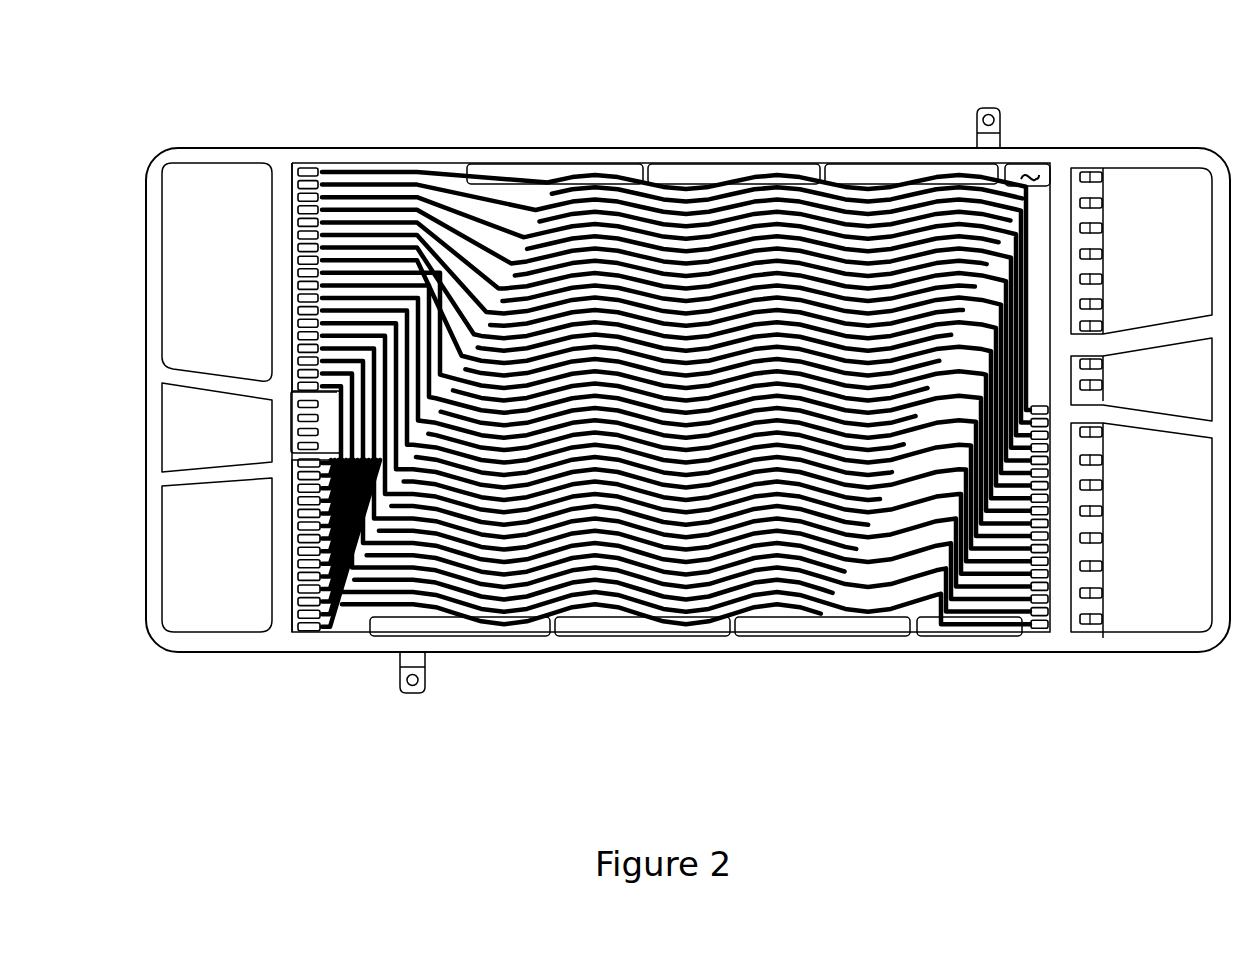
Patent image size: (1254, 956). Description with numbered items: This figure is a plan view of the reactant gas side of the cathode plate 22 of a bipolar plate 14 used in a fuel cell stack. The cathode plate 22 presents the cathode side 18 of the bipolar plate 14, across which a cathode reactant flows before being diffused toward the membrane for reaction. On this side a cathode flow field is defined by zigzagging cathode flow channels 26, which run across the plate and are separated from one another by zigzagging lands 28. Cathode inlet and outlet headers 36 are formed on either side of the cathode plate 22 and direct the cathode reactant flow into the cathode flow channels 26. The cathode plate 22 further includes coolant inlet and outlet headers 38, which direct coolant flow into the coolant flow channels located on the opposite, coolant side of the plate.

The bipolar plate 14 is at (790, 141).
The cathode side 18 is at (1035, 172).
The cathode plate 22 is at (915, 146).
The cathode flow channels 26 is at (575, 185).
The lands 28 is at (738, 195).
The cathode inlet and outlet headers 36 is at (290, 250).
The coolant inlet and outlet headers 38 is at (290, 562).